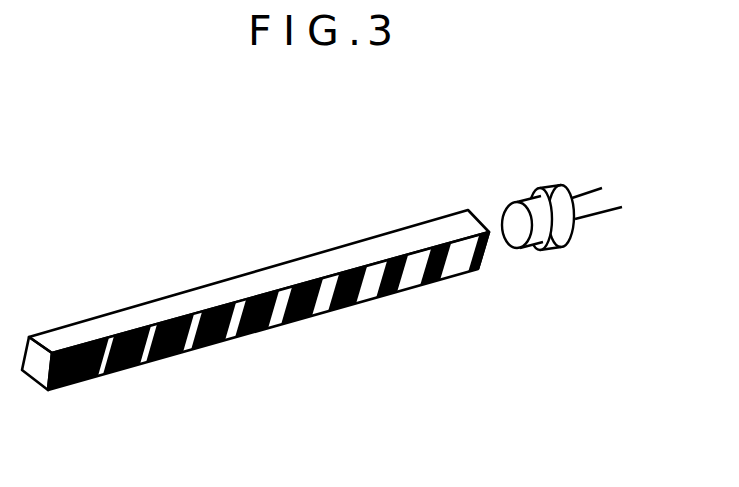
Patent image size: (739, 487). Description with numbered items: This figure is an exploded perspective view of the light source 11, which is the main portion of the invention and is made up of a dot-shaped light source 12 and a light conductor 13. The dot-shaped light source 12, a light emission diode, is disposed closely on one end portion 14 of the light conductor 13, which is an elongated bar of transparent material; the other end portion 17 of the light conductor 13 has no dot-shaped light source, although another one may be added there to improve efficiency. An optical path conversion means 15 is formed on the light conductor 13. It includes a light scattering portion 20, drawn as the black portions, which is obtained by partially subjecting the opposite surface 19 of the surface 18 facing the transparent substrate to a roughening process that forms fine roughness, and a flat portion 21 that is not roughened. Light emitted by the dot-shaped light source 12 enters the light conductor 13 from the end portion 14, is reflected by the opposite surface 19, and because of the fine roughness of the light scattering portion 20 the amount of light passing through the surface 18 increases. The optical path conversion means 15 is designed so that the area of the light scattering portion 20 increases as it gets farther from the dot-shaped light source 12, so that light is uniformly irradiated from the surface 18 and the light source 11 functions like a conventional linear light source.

The light source 11 is at (514, 160).
The dot-shaped light source 12 is at (550, 193).
The light conductor 13 is at (387, 242).
The end portion 14 is at (488, 246).
The optical path conversion means 15 is at (153, 411).
The other end portion 17 is at (36, 362).
The surface 18 is at (240, 274).
The opposite surface 19 is at (365, 288).
The light scattering portion 20 is at (205, 349).
The flat portion 21 is at (276, 317).